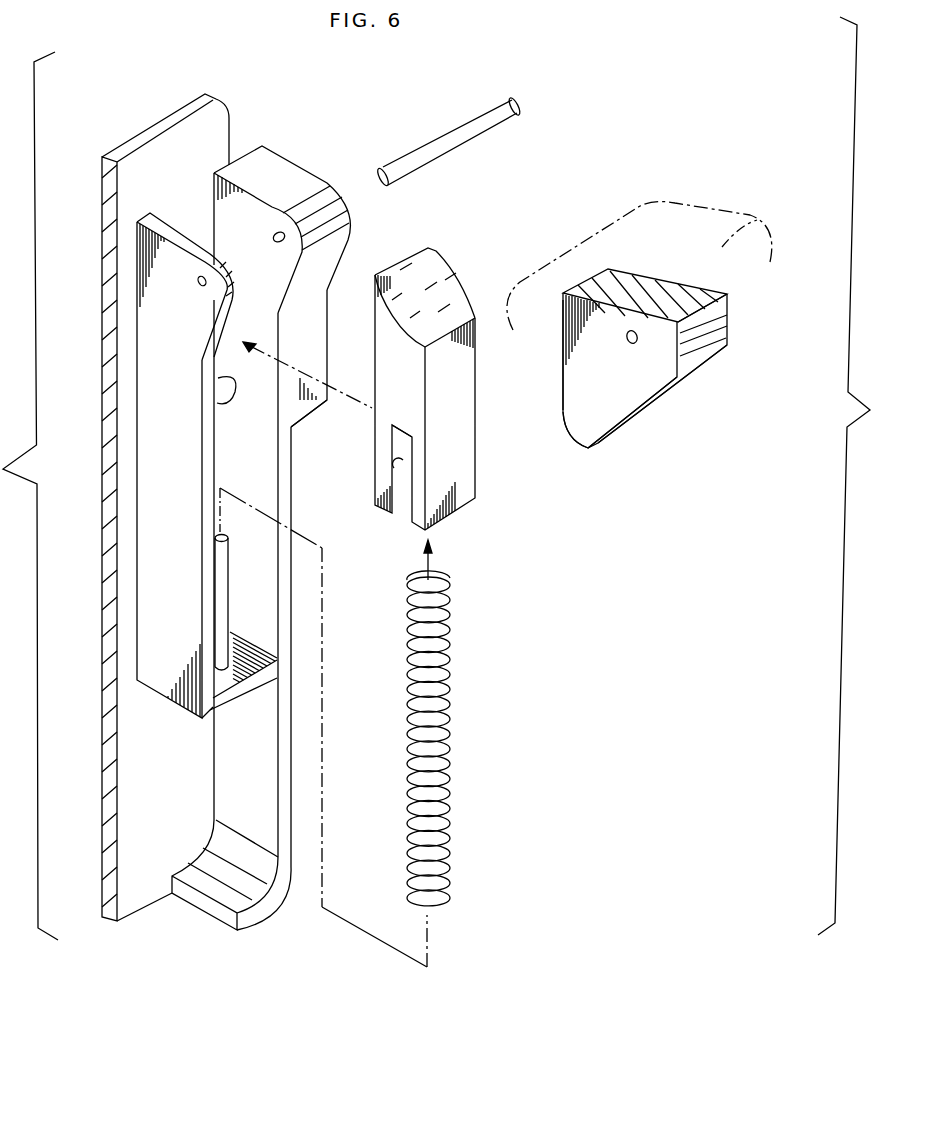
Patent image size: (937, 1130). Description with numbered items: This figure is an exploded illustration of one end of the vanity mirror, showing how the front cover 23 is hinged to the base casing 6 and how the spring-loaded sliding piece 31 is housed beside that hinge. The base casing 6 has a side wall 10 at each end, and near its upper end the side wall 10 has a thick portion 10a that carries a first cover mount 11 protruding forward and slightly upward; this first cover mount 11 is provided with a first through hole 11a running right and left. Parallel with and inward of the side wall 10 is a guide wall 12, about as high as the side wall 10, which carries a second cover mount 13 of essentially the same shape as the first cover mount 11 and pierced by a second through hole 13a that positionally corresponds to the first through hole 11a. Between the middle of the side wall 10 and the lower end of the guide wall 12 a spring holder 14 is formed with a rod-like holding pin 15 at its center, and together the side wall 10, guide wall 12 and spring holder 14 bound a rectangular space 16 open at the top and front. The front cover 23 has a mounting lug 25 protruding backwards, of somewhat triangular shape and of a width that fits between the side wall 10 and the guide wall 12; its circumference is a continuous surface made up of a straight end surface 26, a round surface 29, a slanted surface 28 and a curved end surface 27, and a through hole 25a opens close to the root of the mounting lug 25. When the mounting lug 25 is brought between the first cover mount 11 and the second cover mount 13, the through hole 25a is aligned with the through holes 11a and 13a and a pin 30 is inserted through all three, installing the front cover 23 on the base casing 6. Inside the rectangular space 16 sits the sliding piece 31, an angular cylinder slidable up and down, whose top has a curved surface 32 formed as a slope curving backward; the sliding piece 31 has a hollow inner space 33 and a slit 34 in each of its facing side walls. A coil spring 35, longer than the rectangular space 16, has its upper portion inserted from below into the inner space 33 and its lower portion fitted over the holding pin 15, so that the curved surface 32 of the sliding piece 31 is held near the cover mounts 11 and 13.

The base casing 6 is at (158, 127).
The side wall 10 is at (270, 514).
The thick portion 10a is at (308, 340).
The first cover mount 11 is at (320, 190).
The first through hole 11a is at (277, 233).
The guide wall 12 is at (207, 447).
The second cover mount 13 is at (207, 252).
The second through hole 13a is at (197, 289).
The spring holder 14 is at (242, 688).
The holding pin 15 is at (222, 592).
The rectangular space 16 is at (217, 397).
The front cover 23 is at (622, 217).
The mounting lug 25 is at (644, 399).
The through hole 25a is at (628, 427).
The straight end surface 26 is at (562, 375).
The curved end surface 27 is at (707, 325).
The slanted surface 28 is at (655, 398).
The round surface 29 is at (577, 452).
The pin 30 is at (448, 135).
The sliding piece 31 is at (423, 406).
The curved surface 32 is at (450, 287).
The hollow inner space 33 is at (405, 498).
The slit 34 is at (395, 470).
The coil spring 35 is at (450, 685).